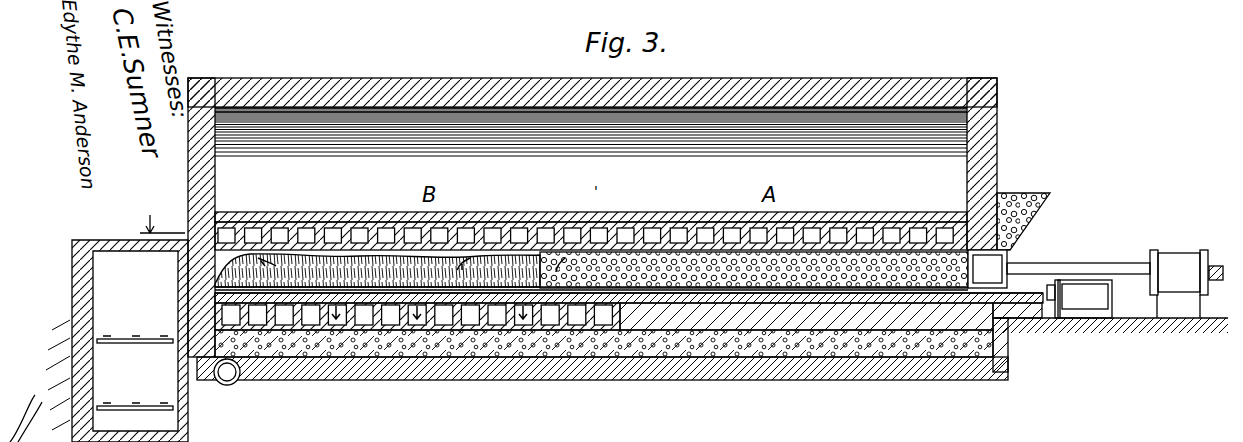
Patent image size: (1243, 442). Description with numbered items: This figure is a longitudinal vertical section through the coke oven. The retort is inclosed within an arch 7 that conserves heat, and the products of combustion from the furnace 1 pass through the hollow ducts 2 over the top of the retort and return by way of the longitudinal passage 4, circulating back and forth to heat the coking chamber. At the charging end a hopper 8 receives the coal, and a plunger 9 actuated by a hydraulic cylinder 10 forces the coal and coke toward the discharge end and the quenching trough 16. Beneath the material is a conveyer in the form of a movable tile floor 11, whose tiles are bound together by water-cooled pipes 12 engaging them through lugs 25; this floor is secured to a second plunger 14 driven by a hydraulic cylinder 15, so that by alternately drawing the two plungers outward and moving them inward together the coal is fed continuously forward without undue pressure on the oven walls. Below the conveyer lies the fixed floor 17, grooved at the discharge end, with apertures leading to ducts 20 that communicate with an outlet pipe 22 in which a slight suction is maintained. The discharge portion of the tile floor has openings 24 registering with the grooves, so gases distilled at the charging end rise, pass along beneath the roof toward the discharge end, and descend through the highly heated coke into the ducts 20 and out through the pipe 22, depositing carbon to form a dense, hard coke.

The furnace 1 is at (879, 92).
The ducts 2 is at (180, 280).
The longitudinal passage 4 is at (444, 295).
The arch 7 is at (228, 222).
The hopper 8 is at (1037, 212).
The plunger 9 is at (1010, 248).
The hydraulic cylinder 10 is at (1186, 284).
The movable tile floor 11 is at (577, 374).
The pipes 12 is at (596, 434).
The plunger 14 is at (1049, 320).
The hydraulic cylinder 15 is at (1085, 299).
The quenching trough 16 is at (117, 341).
The fixed floor 17 is at (493, 331).
The ducts 20 is at (468, 312).
The outlet pipe 22 is at (229, 383).
The openings 24 is at (385, 332).
The lugs 25 is at (359, 441).